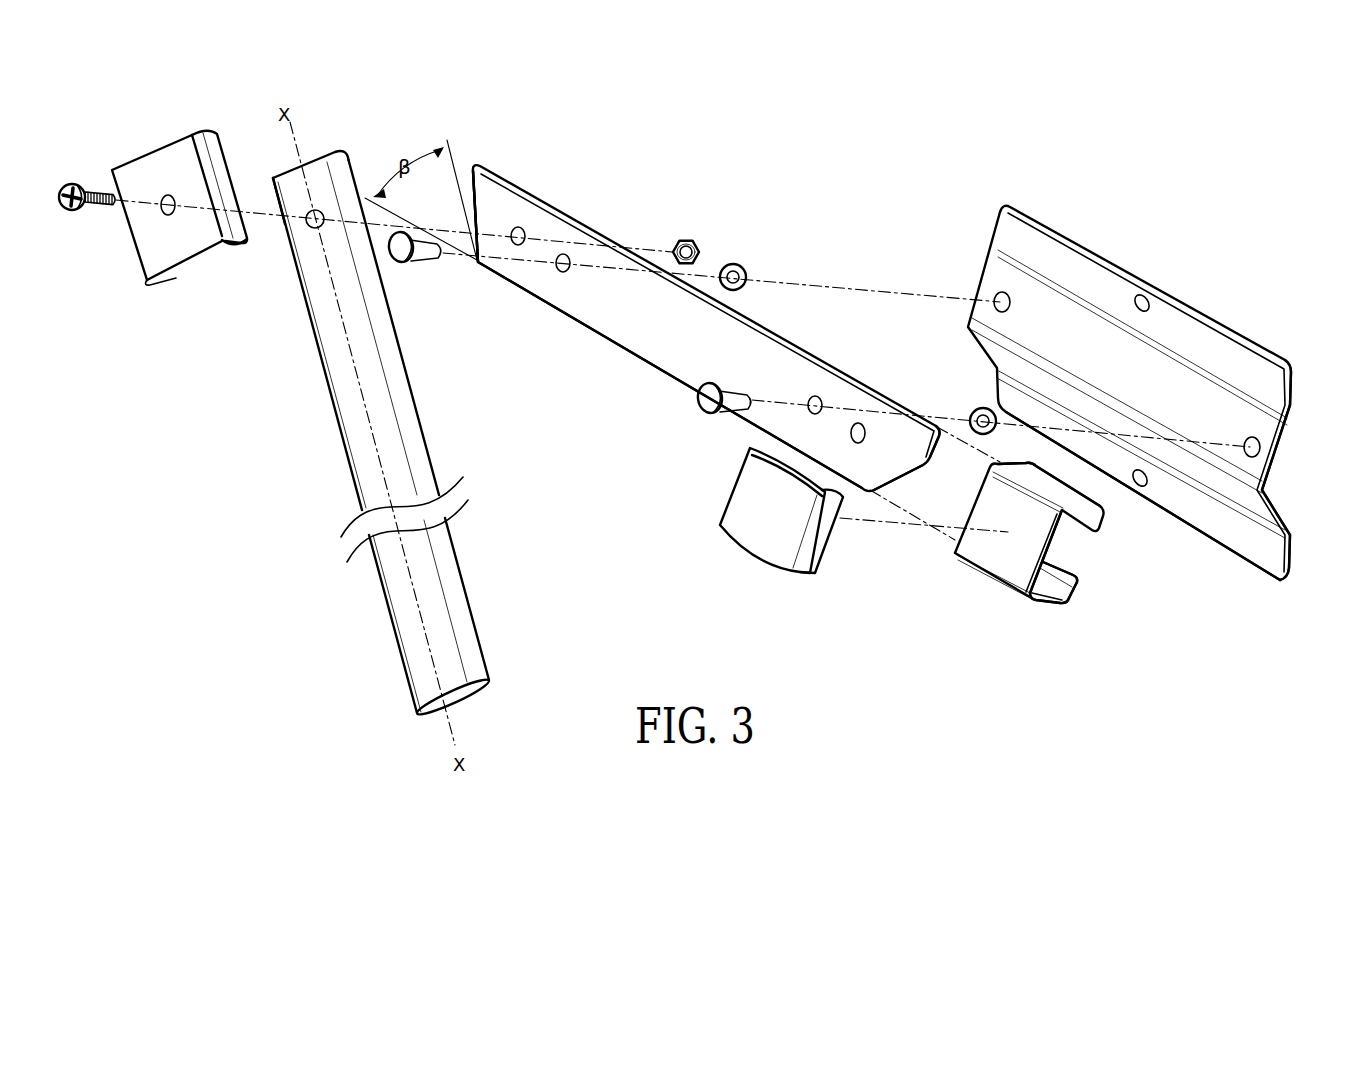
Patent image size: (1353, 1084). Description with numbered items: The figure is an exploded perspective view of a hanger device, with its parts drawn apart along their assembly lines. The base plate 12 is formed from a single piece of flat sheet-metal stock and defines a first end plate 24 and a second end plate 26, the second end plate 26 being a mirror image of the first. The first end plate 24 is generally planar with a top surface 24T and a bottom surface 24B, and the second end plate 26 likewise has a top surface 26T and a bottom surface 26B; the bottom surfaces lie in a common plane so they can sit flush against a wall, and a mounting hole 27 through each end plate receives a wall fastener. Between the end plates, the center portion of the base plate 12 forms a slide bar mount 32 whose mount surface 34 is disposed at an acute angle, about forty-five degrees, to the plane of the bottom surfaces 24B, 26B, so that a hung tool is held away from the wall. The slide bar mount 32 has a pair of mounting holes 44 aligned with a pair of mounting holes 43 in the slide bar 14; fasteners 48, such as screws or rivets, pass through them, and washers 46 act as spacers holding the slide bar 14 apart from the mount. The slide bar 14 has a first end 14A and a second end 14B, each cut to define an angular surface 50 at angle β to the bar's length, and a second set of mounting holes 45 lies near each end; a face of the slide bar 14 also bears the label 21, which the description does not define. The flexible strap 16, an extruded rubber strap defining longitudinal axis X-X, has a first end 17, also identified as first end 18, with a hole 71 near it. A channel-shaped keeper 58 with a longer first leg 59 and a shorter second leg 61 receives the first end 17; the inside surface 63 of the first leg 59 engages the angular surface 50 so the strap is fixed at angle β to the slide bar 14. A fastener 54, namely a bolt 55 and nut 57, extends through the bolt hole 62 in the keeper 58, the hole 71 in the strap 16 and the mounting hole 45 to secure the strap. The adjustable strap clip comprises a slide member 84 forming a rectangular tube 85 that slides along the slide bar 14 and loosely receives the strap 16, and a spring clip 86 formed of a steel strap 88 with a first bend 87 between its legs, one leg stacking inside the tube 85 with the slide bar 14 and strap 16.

The base plate 12 is at (1248, 352).
The slide bar 14 is at (502, 182).
The first end of slide bar 14A is at (478, 170).
The second end of slide bar 14B is at (922, 448).
The flexible strap 16 is at (345, 360).
The first end of flexible strap 17 is at (345, 158).
The first end of strap 18 is at (290, 182).
The bar face 21 is at (670, 375).
The first end plate 24 is at (1072, 262).
The top surface of first end plate 24T is at (1146, 392).
The bottom surface of first end plate 24B is at (1285, 360).
The second end plate 26 is at (1270, 572).
The top surface of second end plate 26T is at (1141, 455).
The bottom surface of second end plate 26B is at (1284, 574).
The mounting hole 27 is at (1143, 296).
The slide bar mount 32 is at (1275, 467).
The mount surface 34 is at (1117, 405).
The mounting holes of slide bar 43 is at (565, 255).
The mounting holes of slide bar mount 44 is at (998, 295).
The mounting holes 45 is at (520, 228).
The washers 46 is at (746, 275).
The fasteners 48 is at (432, 257).
The angular surface 50 is at (470, 222).
The fastener 54 is at (110, 204).
The bolt 55 is at (73, 183).
The nut 57 is at (699, 248).
The keeper 58 is at (192, 240).
The first leg of keeper 59 is at (183, 282).
The second leg of keeper 61 is at (250, 242).
The bolt hole 62 is at (166, 195).
The inside surface of first leg 63 is at (168, 281).
The hole in flexible strap 71 is at (313, 222).
The slide member 84 is at (1012, 560).
The tube 85 is at (1052, 490).
The spring clip 86 is at (752, 530).
The first bend 87 is at (1080, 590).
The steel strap 88 is at (1070, 548).